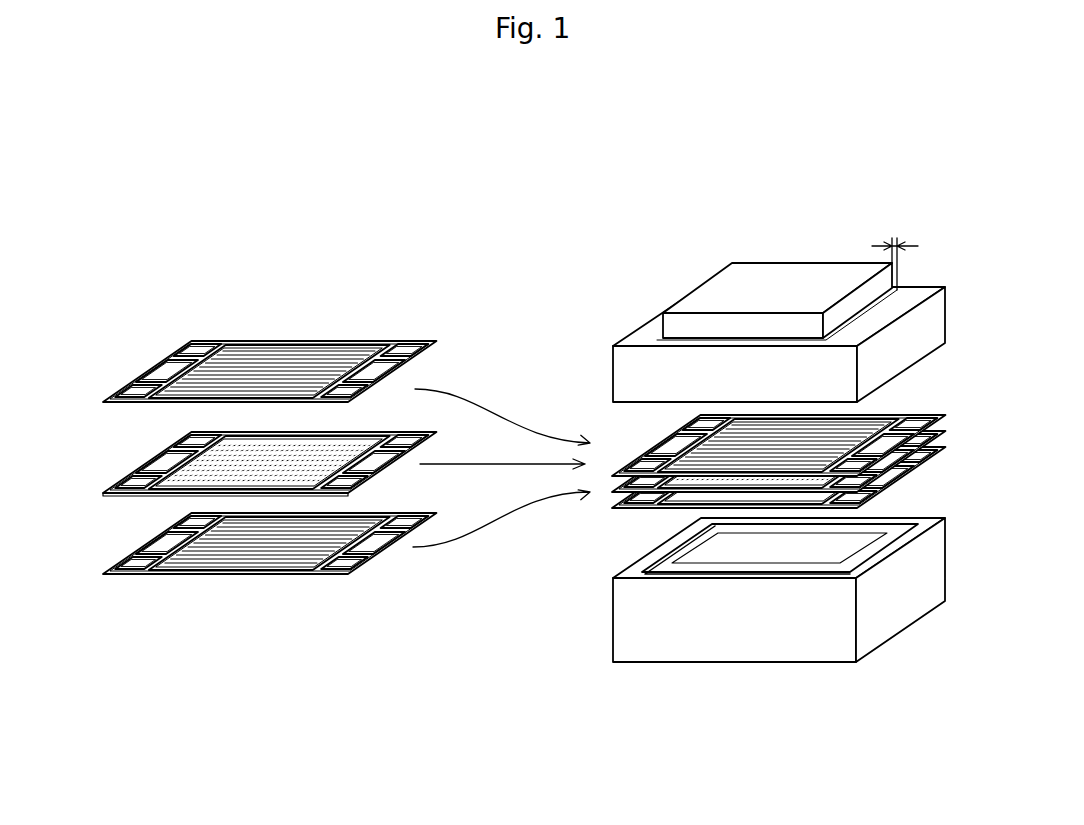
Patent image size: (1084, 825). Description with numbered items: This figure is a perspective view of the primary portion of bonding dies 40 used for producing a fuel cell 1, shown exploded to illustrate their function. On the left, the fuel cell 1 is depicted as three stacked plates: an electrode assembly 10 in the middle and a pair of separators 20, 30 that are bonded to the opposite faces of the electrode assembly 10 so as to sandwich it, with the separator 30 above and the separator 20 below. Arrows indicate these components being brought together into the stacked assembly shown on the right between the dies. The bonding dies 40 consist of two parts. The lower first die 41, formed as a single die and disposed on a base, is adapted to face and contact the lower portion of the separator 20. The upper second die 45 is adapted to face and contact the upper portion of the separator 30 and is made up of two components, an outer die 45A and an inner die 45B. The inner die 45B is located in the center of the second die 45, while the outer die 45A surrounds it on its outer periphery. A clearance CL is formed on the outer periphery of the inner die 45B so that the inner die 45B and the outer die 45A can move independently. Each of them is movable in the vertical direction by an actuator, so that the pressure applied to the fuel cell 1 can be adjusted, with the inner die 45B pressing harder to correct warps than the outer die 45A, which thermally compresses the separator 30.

The fuel cell 1 is at (129, 275).
The electrode assembly 10 is at (118, 461).
The separator 20 is at (298, 597).
The separator 30 is at (272, 325).
The bonding dies 40 is at (736, 573).
The first die 41 is at (663, 652).
The second die 45 is at (729, 317).
The outer die 45A is at (618, 370).
The inner die 45B is at (707, 288).
The clearance CL is at (894, 247).